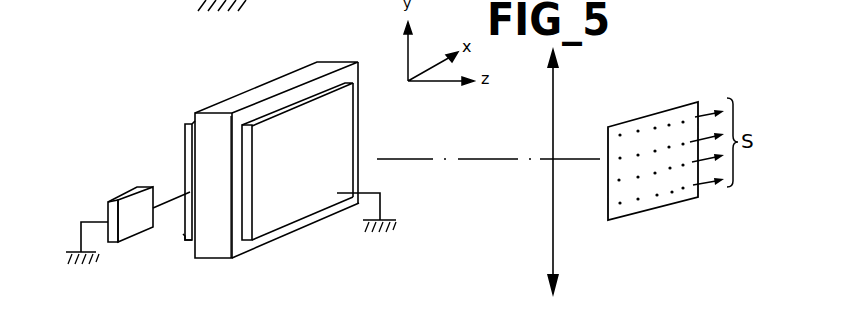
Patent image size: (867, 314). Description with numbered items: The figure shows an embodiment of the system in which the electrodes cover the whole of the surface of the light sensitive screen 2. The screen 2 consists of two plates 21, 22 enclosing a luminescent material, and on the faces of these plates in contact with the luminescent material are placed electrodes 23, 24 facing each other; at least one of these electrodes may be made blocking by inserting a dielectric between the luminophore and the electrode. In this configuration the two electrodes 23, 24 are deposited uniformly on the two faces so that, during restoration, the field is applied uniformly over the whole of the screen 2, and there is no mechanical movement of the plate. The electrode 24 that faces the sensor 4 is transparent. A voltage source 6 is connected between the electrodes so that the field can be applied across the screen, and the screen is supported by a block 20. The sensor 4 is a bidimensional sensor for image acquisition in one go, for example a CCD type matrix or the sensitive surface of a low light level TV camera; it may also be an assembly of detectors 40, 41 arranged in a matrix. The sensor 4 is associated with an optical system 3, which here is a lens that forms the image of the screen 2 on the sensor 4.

The screen 2 is at (368, 58).
The optical system 3 is at (552, 212).
The sensor 4 is at (635, 147).
The voltage source 6 is at (131, 187).
The insulating block 20 is at (213, 247).
The plate 21 is at (193, 251).
The plate 22 is at (236, 251).
The electrode 23 is at (185, 237).
The electrode 24 is at (292, 204).
The detector 40 is at (620, 134).
The detector 41 is at (638, 131).